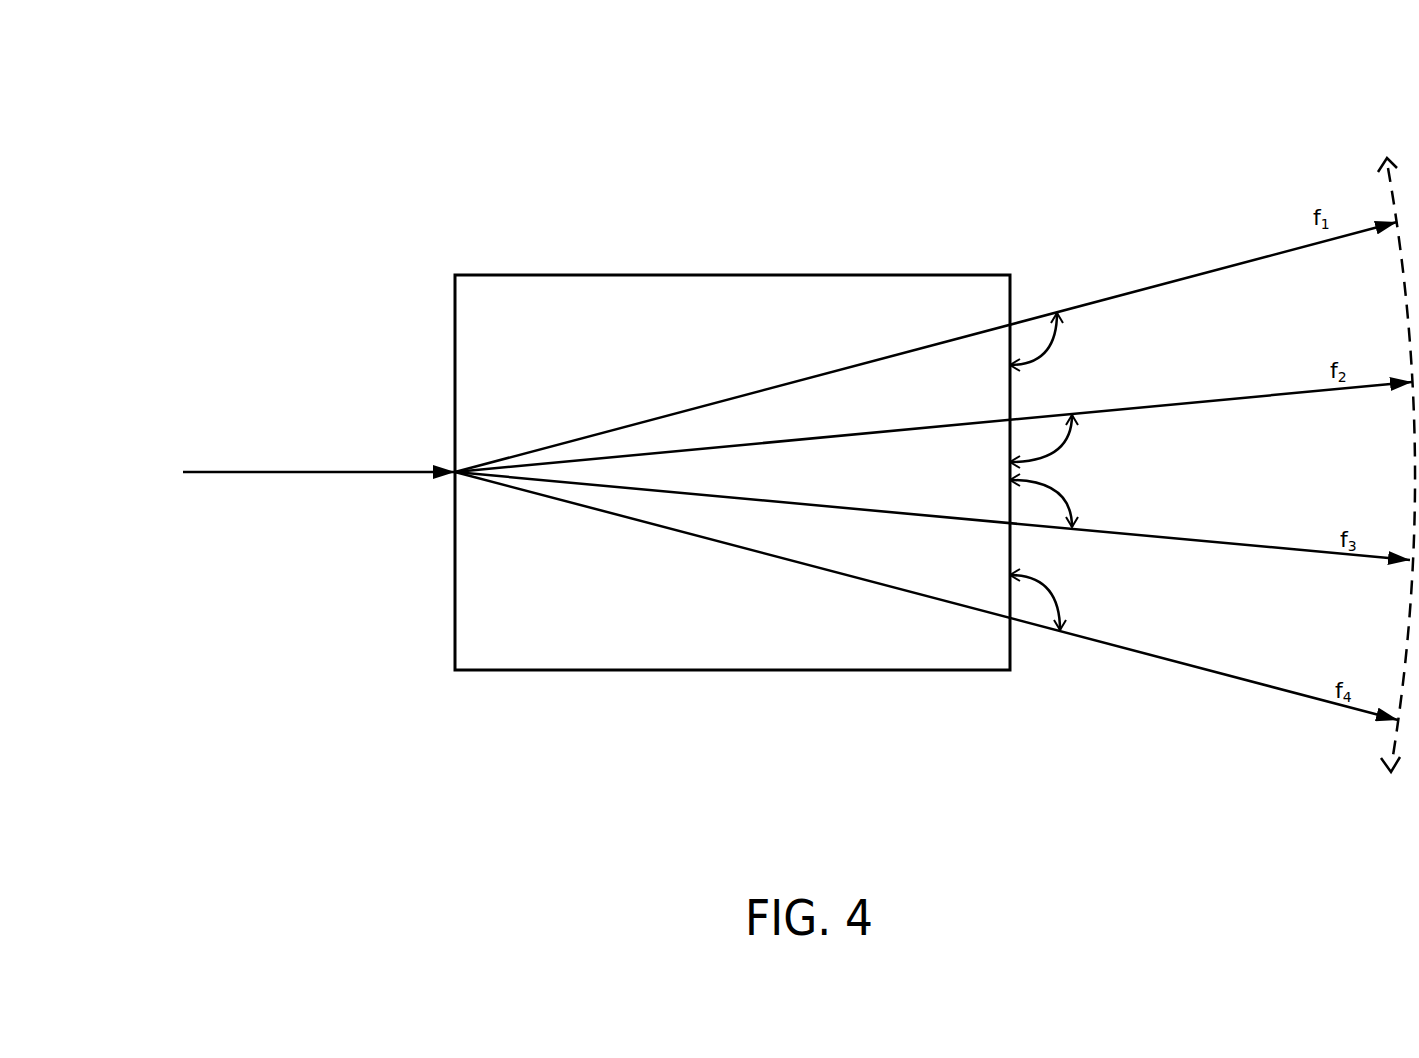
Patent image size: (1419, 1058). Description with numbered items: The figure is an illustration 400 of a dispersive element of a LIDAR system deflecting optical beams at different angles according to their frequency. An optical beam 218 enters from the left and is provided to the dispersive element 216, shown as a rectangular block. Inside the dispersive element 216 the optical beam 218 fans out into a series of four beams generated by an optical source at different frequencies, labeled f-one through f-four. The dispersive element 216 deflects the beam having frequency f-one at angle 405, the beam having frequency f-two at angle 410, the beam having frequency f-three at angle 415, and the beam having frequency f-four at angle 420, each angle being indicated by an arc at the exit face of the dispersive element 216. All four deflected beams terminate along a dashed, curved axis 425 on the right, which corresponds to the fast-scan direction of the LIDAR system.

The illustration 400 is at (175, 73).
The dispersive element 216 is at (706, 270).
The optical beam 218 is at (319, 455).
The angle 405 is at (1060, 332).
The angle 410 is at (1074, 435).
The angle 415 is at (1064, 500).
The angle 420 is at (1062, 595).
The axis 425 is at (1385, 162).